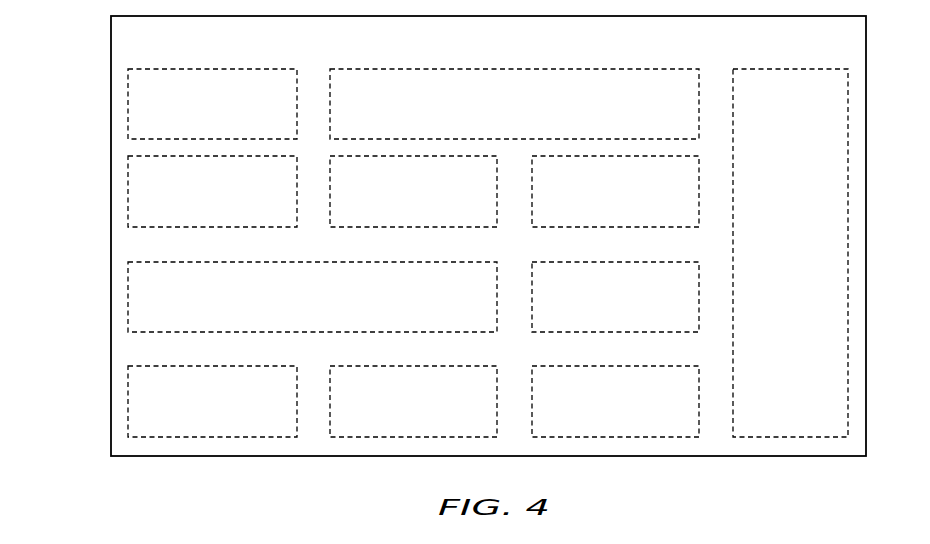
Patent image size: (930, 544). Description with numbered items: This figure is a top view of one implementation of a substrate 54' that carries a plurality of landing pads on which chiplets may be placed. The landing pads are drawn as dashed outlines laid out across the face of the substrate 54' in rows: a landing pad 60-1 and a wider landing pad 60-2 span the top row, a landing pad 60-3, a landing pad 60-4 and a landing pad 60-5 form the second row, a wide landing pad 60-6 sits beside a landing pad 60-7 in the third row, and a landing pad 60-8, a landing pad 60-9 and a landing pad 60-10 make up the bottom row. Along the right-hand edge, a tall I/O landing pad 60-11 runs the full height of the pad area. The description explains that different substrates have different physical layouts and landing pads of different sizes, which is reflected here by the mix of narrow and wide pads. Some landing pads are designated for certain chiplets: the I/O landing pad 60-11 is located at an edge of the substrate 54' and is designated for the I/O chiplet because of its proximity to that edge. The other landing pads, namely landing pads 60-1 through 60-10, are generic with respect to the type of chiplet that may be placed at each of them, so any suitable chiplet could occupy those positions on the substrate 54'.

The substrate 54' is at (455, 236).
The landing pad 60-1 is at (192, 126).
The landing pad 60-2 is at (494, 126).
The landing pad 60-3 is at (192, 213).
The landing pad 60-4 is at (393, 213).
The landing pad 60-5 is at (595, 213).
The landing pad 60-6 is at (292, 319).
The landing pad 60-7 is at (595, 319).
The landing pad 60-8 is at (192, 423).
The landing pad 60-9 is at (393, 423).
The landing pad 60-10 is at (590, 423).
The I/O landing pad 60-11 is at (766, 297).